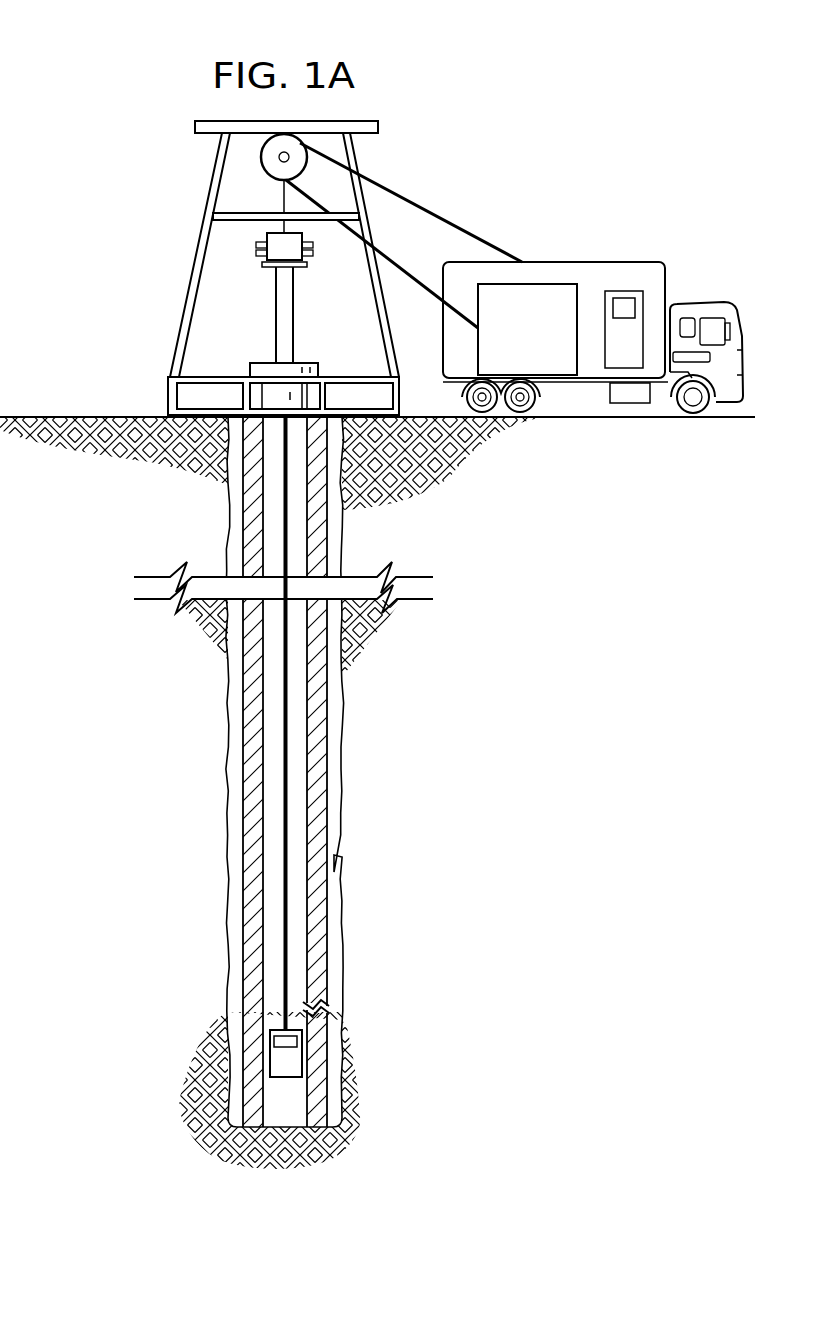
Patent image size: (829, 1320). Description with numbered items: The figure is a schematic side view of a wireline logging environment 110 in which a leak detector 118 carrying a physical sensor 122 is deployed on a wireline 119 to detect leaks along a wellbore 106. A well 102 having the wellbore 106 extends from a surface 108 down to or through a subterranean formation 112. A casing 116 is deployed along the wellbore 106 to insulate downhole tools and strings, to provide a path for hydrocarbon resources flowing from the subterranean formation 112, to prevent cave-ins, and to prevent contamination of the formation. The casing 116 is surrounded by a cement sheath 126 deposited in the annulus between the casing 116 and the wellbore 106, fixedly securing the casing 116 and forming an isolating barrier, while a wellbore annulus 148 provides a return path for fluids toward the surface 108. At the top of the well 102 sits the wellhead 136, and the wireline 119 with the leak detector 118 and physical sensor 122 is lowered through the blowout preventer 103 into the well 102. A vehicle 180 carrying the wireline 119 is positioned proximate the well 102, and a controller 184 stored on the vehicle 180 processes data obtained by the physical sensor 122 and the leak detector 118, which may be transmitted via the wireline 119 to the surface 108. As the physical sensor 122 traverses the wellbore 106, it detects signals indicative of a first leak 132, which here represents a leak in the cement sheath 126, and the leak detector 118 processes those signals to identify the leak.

The well system 110 is at (106, 82).
The wireline 119 is at (279, 198).
The blowout preventer 103 is at (275, 300).
The wellhead 136 is at (262, 363).
The well 102 is at (314, 351).
The surface 108 is at (87, 416).
The controller 184 is at (527, 283).
The vehicle 180 is at (587, 262).
The subterranean formation 112 is at (545, 693).
The cement sheath 126 is at (335, 712).
The wellbore 106 is at (334, 748).
The casing 116 is at (320, 829).
The wellbore annulus 148 is at (270, 867).
The first leak 132 is at (362, 1003).
The physical sensor 122 is at (270, 1047).
The leak detector 118 is at (293, 1060).